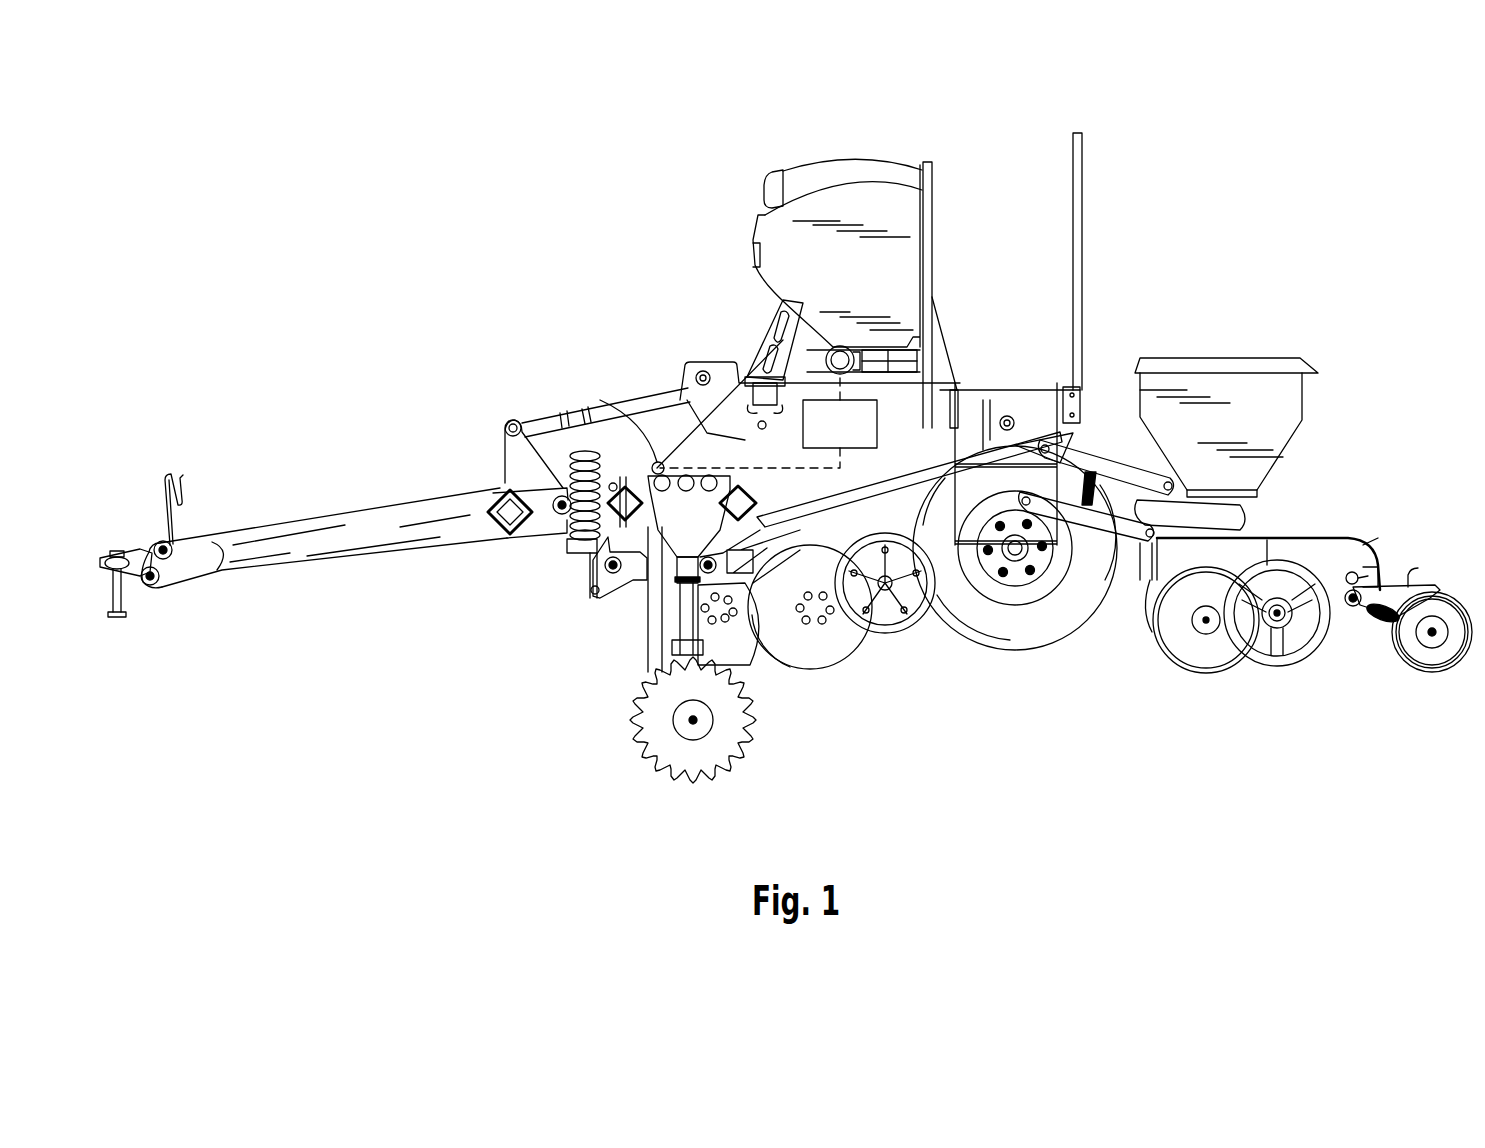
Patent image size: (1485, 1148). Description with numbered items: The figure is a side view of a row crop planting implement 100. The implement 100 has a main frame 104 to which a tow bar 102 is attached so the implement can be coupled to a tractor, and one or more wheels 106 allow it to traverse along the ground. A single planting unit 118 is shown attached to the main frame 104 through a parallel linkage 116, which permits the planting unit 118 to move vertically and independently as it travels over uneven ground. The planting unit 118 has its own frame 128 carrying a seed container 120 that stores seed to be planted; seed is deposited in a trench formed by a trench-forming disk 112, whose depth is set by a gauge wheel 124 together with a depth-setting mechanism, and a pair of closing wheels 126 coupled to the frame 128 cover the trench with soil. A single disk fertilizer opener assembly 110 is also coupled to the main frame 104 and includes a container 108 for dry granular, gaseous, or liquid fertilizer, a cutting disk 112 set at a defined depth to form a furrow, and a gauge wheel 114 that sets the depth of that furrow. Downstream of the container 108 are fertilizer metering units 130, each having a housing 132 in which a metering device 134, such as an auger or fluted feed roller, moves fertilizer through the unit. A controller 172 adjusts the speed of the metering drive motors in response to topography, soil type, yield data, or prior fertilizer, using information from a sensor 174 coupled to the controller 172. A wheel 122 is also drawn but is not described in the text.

The planting implement 100 is at (583, 213).
The tow bar 102 is at (348, 527).
The main frame 104 is at (710, 437).
The wheel 106 is at (1057, 623).
The container 108 is at (852, 215).
The single disk fertilizer opener assembly 110 is at (883, 681).
The cutting disk 112 is at (820, 660).
The gauge wheel 114 is at (913, 630).
The parallel linkage 116 is at (1127, 447).
The planting unit 118 is at (1357, 445).
The seed container 120 is at (1231, 385).
The press wheel 122 is at (1193, 655).
The gauge wheel 124 is at (1282, 652).
The closing wheel 126 is at (1448, 645).
The frame 128 is at (1323, 553).
The fertilizer metering unit 130 is at (822, 343).
The housing 132 is at (830, 358).
The metering device 134 is at (897, 368).
The controller 172 is at (764, 423).
The sensor 174 is at (587, 412).